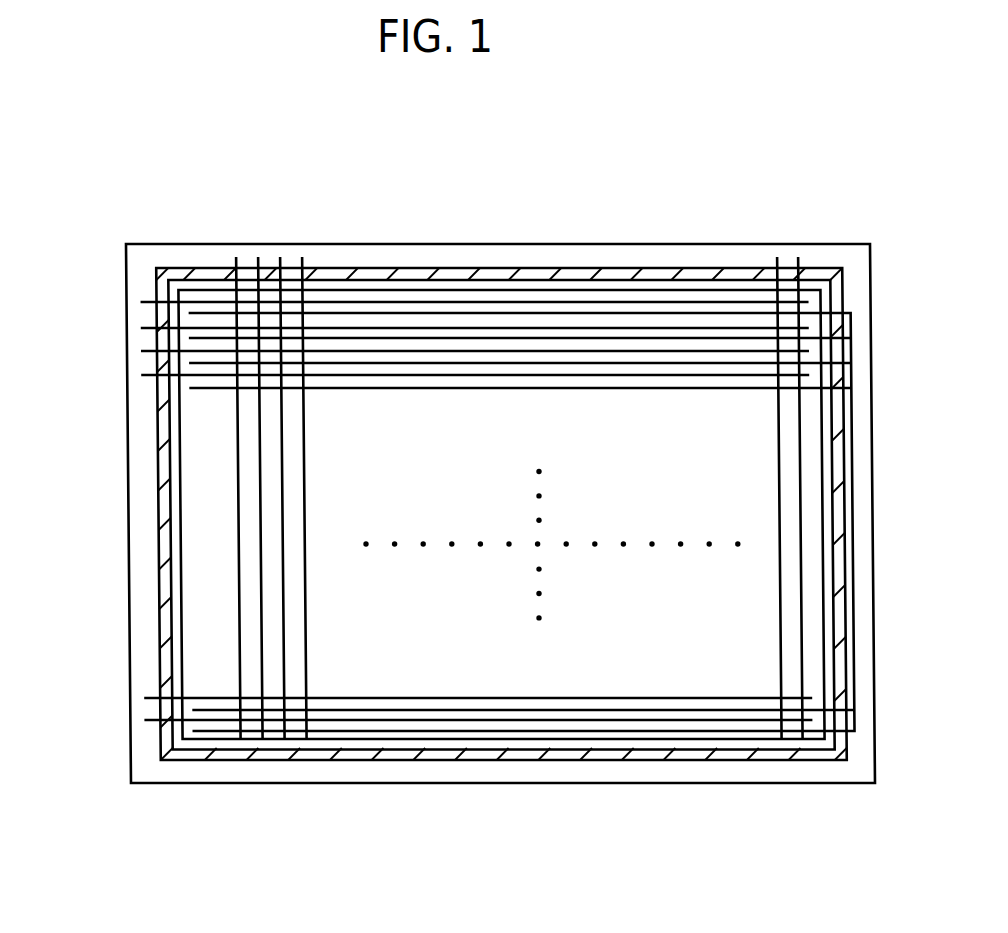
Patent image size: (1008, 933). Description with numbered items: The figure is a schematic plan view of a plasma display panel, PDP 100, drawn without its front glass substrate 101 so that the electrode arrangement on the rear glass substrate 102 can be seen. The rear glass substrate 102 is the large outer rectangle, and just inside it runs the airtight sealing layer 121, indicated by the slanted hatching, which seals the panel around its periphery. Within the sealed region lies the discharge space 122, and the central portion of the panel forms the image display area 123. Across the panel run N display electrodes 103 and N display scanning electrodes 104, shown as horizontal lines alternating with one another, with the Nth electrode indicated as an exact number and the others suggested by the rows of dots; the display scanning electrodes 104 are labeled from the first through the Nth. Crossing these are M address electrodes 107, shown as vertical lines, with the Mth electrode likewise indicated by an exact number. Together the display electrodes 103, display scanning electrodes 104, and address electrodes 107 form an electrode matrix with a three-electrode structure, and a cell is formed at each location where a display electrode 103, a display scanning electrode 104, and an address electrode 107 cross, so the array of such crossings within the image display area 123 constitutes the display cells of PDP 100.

The plasma display panel 100 is at (525, 478).
The front glass substrate 101 is at (524, 478).
The rear glass substrate 102 is at (830, 244).
The display electrodes 103 is at (199, 389).
The display scanning electrodes 104 is at (140, 302).
The address electrodes 107 is at (236, 258).
The airtight sealing layer 121 is at (485, 268).
The discharge space 122 is at (595, 418).
The image display area 123 is at (180, 530).